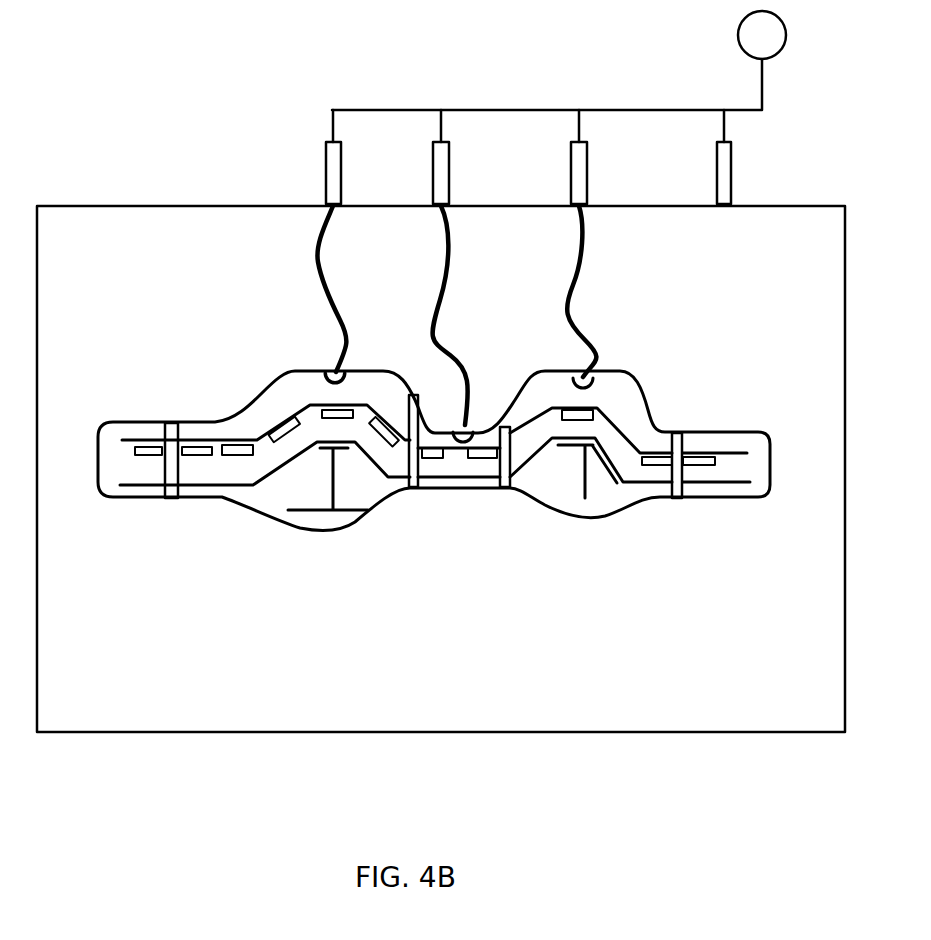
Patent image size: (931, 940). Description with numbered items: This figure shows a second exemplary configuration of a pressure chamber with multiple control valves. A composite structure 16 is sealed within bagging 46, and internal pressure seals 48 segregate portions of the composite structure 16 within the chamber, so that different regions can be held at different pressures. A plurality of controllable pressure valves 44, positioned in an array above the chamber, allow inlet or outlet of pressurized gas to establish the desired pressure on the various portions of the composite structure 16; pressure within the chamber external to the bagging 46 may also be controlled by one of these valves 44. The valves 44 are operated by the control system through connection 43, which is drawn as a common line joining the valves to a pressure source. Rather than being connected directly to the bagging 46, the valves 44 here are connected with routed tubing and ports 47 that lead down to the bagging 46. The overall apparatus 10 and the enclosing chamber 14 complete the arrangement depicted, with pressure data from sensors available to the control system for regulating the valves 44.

The compression device 10 is at (427, 418).
The enclosure 14 is at (197, 200).
The composite structure 16 is at (215, 495).
The connection 43 is at (523, 110).
The controllable pressure valves 44 is at (341, 180).
The bagging 46 is at (293, 371).
The routed tubing and ports 47 is at (347, 323).
The internal pressure seals 48 is at (173, 473).